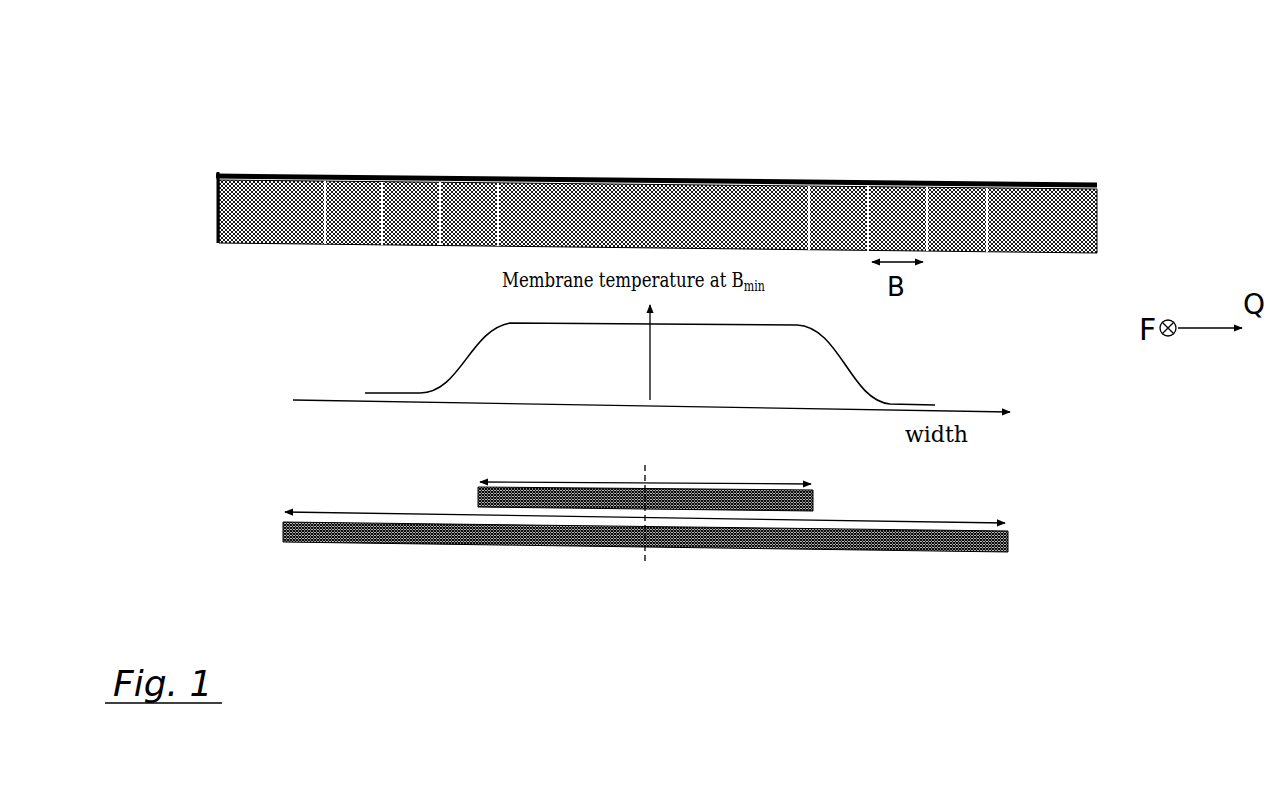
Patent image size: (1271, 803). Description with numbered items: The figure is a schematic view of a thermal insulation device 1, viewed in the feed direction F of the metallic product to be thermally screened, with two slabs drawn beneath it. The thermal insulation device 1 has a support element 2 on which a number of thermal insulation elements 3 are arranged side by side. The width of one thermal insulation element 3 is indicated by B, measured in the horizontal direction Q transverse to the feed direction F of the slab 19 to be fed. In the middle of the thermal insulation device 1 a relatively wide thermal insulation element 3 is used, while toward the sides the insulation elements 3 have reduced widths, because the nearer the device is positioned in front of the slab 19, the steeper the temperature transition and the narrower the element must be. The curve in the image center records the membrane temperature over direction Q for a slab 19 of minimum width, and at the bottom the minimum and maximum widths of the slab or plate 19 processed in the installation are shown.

The thermal insulation device 1 is at (665, 132).
The support element 2 is at (368, 177).
The thermal insulation element 3 is at (645, 183).
The slab 19 is at (613, 572).